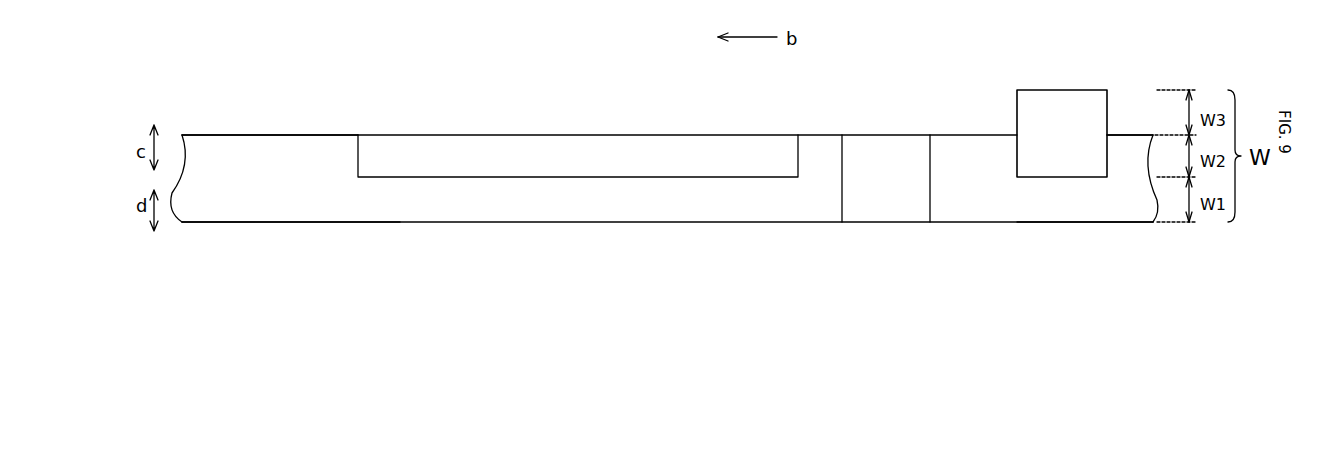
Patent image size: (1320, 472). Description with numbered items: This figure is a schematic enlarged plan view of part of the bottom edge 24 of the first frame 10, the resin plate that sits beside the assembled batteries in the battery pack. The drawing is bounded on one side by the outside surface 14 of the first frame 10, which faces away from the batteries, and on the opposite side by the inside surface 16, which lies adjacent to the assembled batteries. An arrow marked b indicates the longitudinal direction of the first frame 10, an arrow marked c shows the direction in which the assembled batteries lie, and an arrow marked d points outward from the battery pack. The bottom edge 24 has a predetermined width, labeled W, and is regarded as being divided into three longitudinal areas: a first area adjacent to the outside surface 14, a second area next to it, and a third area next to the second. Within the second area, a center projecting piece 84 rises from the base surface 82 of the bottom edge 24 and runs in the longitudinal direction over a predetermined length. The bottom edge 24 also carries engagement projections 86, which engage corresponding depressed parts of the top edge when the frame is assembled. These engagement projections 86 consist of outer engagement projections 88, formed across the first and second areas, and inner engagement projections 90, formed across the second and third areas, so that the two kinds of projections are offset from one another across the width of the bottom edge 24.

The first frame 10 is at (664, 210).
The outside surface 14 is at (218, 222).
The inside surface 16 is at (212, 135).
The bottom edge 24 is at (1090, 223).
The base surface 82 is at (545, 205).
The center projecting piece 84 is at (593, 152).
The engagement projections 86 is at (974, 206).
The outer engagement projections 88 is at (903, 193).
The inner engagement projections 90 is at (1045, 157).